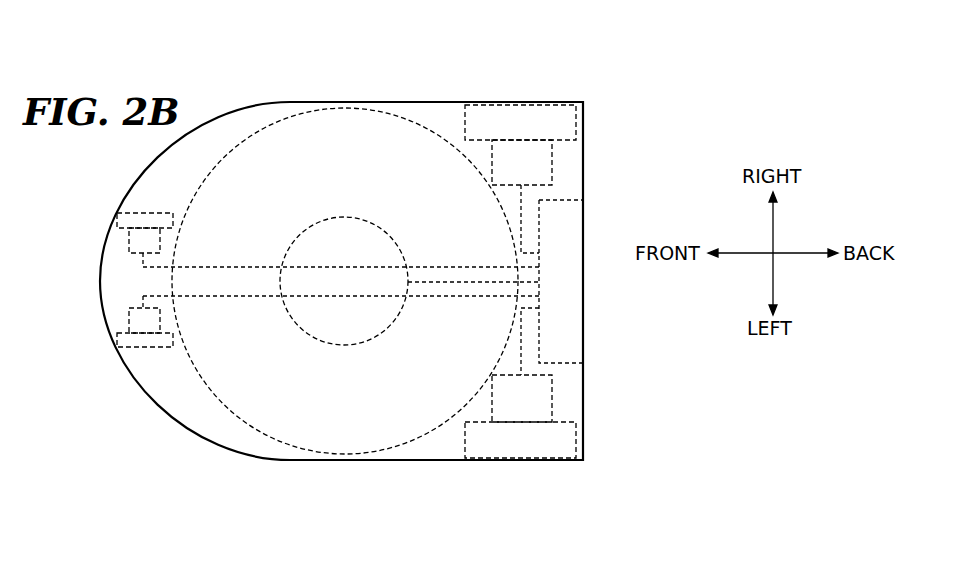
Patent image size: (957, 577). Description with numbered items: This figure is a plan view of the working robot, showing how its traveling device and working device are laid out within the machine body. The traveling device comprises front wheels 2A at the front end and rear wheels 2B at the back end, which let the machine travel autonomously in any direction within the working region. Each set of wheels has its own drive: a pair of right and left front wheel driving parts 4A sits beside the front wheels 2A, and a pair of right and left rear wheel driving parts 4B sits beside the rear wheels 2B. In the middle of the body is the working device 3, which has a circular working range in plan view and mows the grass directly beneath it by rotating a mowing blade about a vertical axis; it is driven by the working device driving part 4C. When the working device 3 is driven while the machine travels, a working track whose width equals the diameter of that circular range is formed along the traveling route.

The working device 3 is at (257, 131).
The front wheels 2A is at (132, 215).
The rear wheels 2B is at (516, 103).
The front wheel driving parts 4A is at (128, 241).
The rear wheel driving parts 4B is at (553, 147).
The working device driving part 4C is at (333, 345).